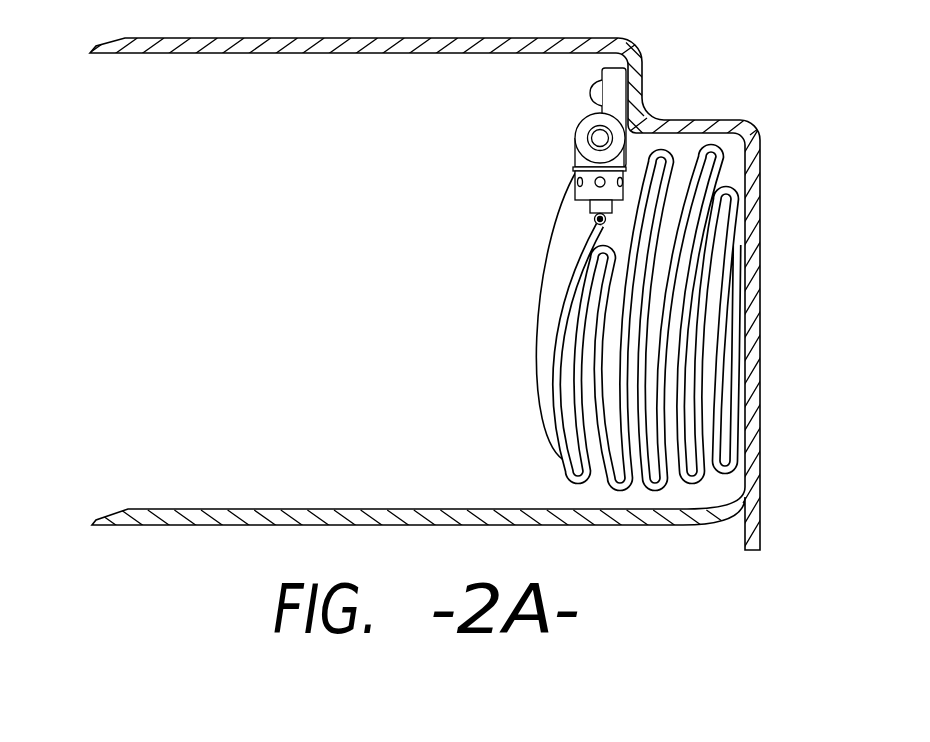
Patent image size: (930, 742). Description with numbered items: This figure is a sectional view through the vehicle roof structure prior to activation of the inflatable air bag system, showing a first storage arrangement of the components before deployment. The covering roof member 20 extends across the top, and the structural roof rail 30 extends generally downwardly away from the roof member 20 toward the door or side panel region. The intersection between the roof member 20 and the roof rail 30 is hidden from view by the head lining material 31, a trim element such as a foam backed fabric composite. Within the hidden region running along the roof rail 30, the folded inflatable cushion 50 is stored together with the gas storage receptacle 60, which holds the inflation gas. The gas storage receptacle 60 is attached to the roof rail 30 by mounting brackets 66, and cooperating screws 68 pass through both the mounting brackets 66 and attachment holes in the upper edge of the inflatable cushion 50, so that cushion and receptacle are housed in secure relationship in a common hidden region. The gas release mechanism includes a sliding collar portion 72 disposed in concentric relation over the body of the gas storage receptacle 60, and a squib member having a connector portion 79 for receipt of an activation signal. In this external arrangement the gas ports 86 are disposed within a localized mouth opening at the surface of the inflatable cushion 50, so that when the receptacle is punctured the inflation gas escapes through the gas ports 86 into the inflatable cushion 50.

The covering roof member 20 is at (362, 55).
The structural roof rail 30 is at (762, 241).
The head lining material 31 is at (357, 508).
The inflatable cushion 50 is at (545, 372).
The gas storage receptacle 60 is at (580, 128).
The mounting brackets 66 is at (640, 96).
The screws 68 is at (590, 79).
The sliding collar portion 72 is at (590, 121).
The connector portion 79 is at (596, 224).
The gas ports 86 is at (572, 183).